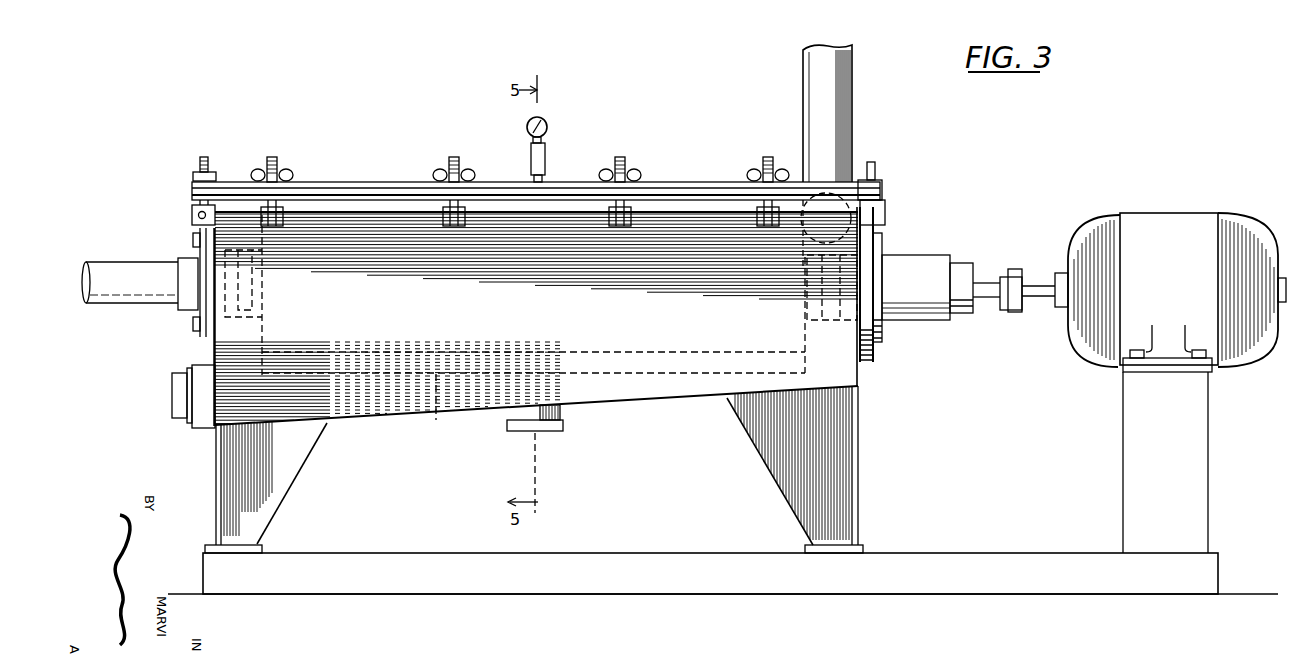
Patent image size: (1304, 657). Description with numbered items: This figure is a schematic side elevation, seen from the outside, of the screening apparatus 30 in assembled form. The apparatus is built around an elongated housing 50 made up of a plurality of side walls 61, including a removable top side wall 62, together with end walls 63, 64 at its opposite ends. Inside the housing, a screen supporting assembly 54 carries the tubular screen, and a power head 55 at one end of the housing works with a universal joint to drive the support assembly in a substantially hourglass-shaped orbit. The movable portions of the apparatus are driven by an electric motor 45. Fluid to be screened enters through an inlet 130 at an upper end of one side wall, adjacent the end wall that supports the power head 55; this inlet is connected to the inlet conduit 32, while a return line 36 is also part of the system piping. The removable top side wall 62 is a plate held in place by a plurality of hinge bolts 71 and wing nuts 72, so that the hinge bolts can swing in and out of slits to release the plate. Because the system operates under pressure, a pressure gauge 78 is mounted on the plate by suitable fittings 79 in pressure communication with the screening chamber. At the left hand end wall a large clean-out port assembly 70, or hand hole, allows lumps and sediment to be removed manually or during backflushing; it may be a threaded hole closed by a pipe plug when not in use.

The screening apparatus 30 is at (832, 599).
The inlet conduit 32 is at (853, 133).
The return line 36 is at (122, 262).
The electric motor 45 is at (1147, 289).
The housing 50 is at (381, 424).
The screen supporting assembly 54 is at (436, 410).
The power head 55 is at (835, 322).
The side walls 61 is at (629, 405).
The removable top side wall 62 is at (657, 184).
The end wall 63 is at (214, 347).
The end wall 64 is at (859, 387).
The clean-out port assembly 70 is at (178, 410).
The hinge bolts 71 is at (205, 157).
The wing nuts 72 is at (288, 173).
The pressure gauge 78 is at (548, 129).
The fittings 79 is at (546, 165).
The inlet 130 is at (814, 196).